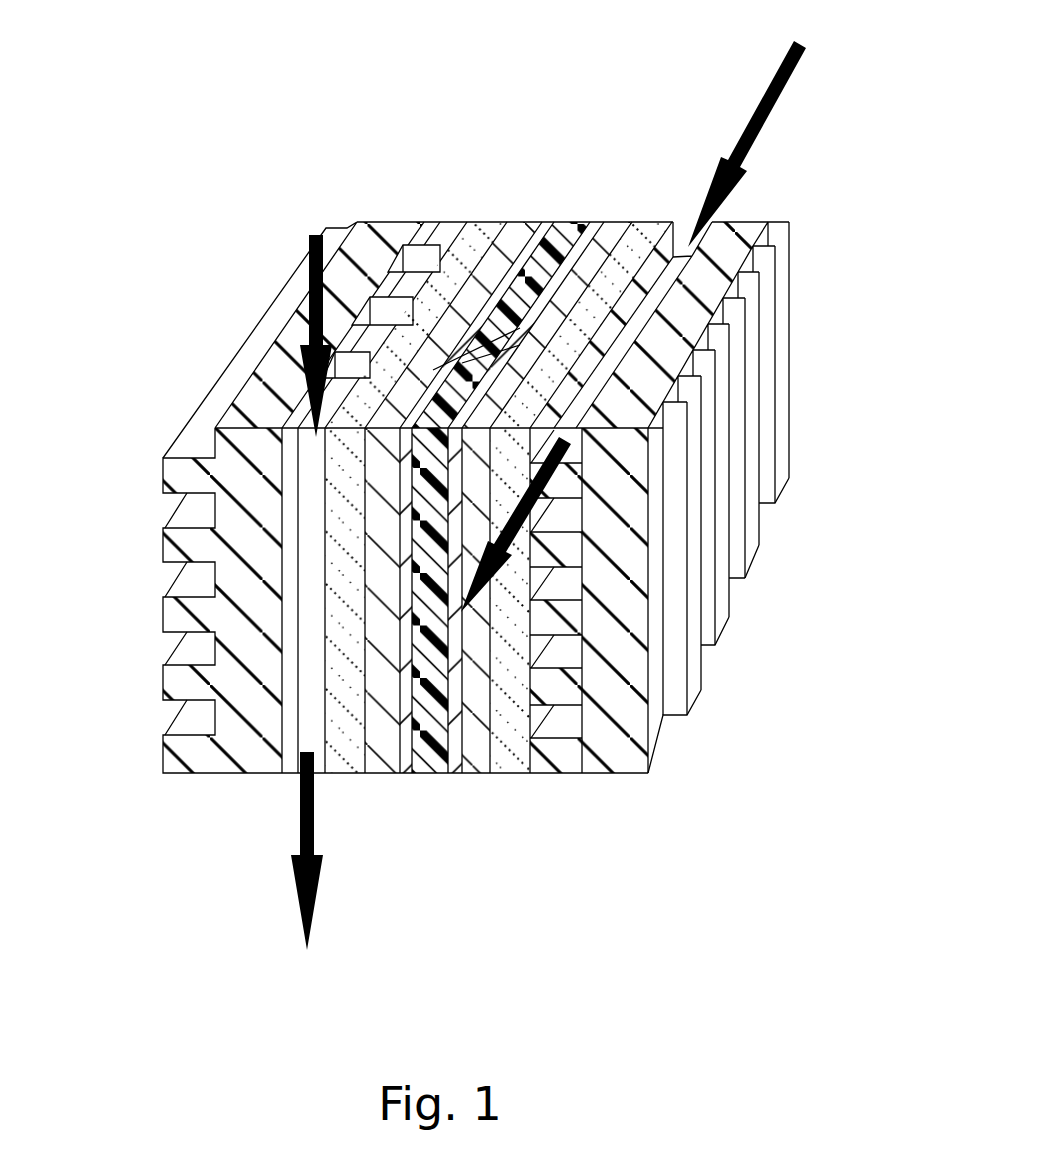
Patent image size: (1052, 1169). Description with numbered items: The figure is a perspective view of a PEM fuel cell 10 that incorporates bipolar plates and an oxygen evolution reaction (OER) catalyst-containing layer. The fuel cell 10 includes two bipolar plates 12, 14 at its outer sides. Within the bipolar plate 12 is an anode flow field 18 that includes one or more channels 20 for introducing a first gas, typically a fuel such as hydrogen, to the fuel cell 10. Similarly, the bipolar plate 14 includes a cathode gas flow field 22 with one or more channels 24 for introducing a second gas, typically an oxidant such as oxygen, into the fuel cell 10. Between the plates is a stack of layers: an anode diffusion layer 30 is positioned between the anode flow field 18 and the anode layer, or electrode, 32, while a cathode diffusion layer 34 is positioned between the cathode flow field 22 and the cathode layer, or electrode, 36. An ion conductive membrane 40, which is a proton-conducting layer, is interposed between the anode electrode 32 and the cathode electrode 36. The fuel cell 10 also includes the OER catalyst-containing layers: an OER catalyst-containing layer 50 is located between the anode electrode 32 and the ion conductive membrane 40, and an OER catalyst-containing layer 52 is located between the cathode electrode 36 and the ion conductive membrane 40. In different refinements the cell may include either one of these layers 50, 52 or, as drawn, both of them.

The PEM fuel cell 10 is at (266, 170).
The bipolar plate 12 is at (250, 320).
The bipolar plate 14 is at (792, 350).
The anode flow field 18 is at (376, 242).
The channels 20 is at (420, 255).
The cathode gas flow field 22 is at (742, 230).
The channels 24 is at (553, 720).
The anode diffusion layer 30 is at (480, 226).
The anode layer 32 is at (520, 228).
The cathode diffusion layer 34 is at (646, 228).
The cathode layer 36 is at (612, 228).
The ion conductive membrane 40 is at (572, 228).
The OER catalyst-containing layer 50 is at (542, 228).
The OER catalyst-containing layer 52 is at (592, 228).